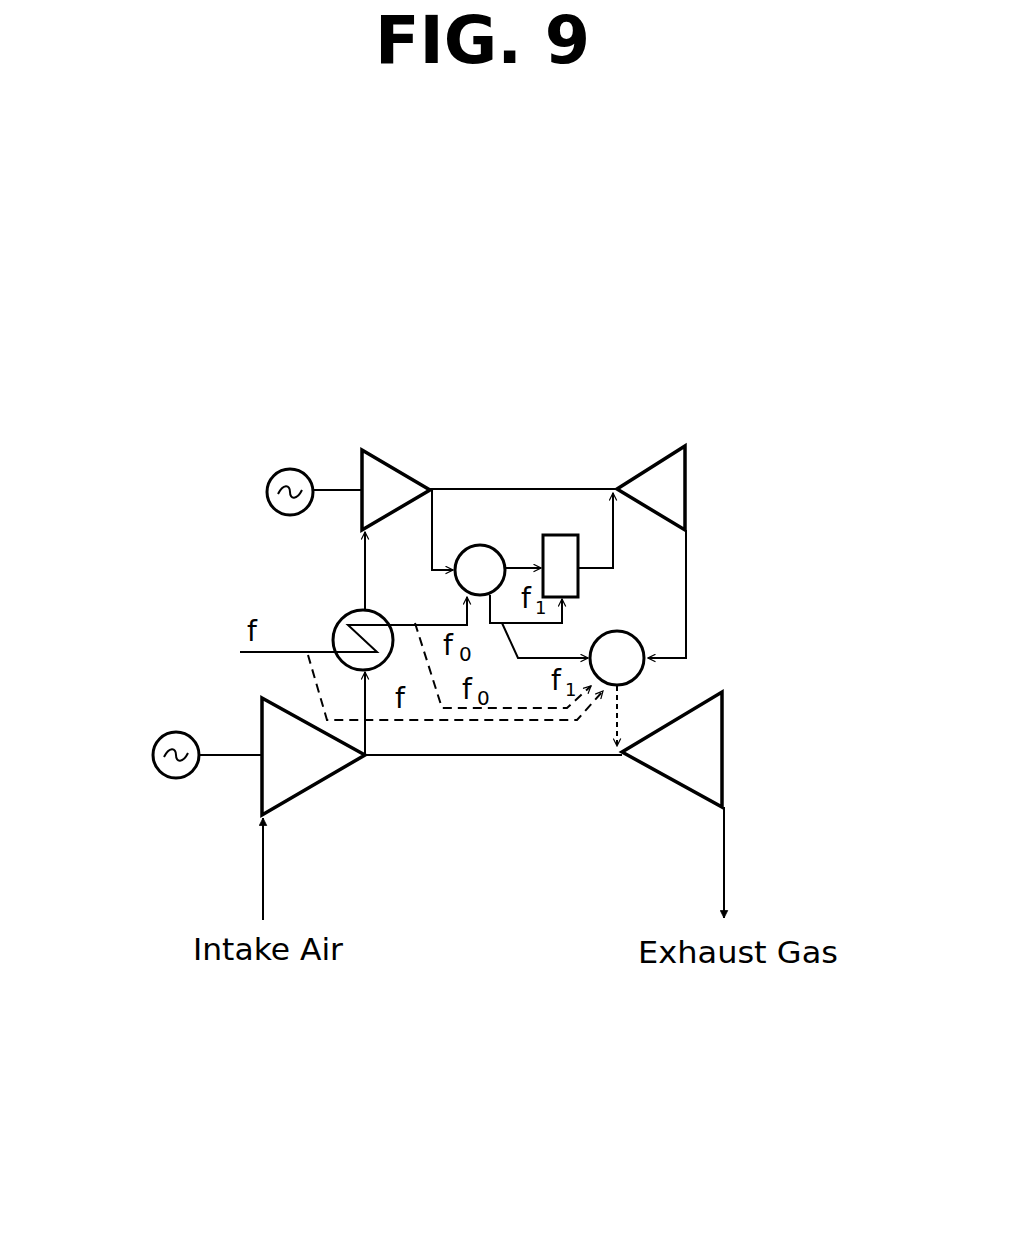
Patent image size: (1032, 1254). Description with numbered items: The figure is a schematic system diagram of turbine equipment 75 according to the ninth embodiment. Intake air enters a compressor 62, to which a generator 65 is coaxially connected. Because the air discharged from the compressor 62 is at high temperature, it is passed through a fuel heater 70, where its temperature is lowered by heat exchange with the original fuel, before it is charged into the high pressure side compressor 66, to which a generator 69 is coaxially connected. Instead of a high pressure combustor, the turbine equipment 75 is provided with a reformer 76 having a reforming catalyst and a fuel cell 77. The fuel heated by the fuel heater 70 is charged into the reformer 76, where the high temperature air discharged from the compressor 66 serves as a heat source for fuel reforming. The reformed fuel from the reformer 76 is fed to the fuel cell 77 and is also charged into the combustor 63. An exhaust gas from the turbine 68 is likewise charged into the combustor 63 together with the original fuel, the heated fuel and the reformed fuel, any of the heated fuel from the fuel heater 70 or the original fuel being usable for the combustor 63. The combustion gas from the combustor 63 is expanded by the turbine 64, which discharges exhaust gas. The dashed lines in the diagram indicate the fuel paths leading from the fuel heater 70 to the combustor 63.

The compressor 62 is at (330, 773).
The combustor 63 is at (637, 632).
The turbine 64 is at (703, 752).
The generator 65 is at (176, 779).
The compressor 66 is at (385, 460).
The turbine 68 is at (685, 489).
The generator 69 is at (280, 468).
The fuel heater 70 is at (338, 620).
The turbine equipment 75 is at (536, 842).
The reformer 76 is at (483, 543).
The fuel cell 77 is at (560, 535).